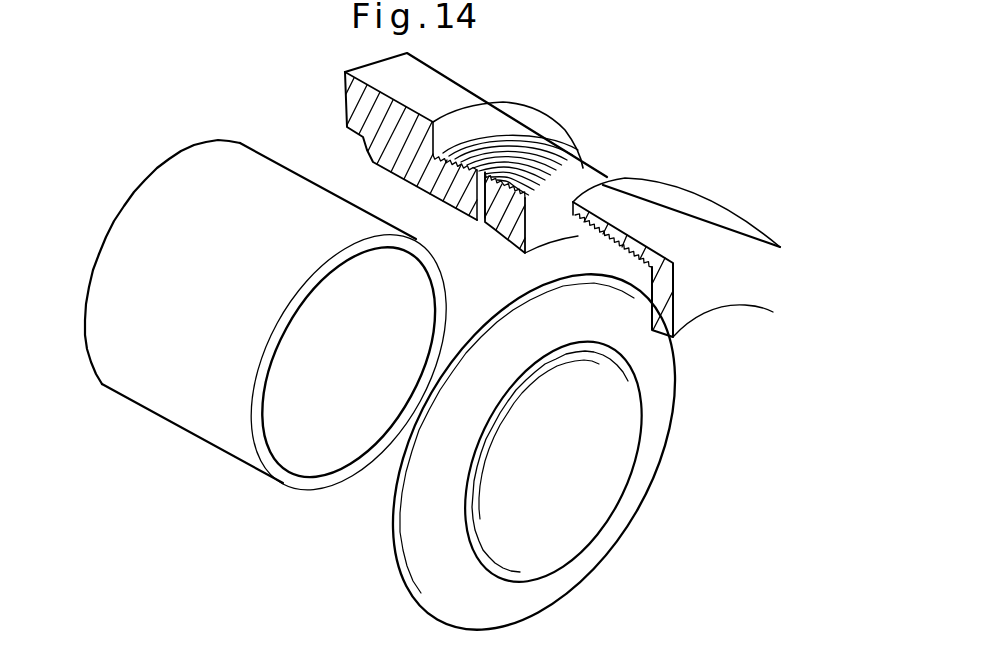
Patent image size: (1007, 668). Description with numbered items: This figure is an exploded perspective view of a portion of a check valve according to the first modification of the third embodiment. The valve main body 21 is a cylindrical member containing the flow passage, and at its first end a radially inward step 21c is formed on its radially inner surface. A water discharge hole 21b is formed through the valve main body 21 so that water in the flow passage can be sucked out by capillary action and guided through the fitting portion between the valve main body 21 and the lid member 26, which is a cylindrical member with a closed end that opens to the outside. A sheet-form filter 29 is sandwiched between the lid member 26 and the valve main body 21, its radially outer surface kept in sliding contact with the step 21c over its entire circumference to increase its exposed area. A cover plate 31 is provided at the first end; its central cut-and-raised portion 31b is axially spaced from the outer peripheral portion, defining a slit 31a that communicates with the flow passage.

The valve main body 21 is at (472, 88).
The water discharge hole 21b is at (477, 177).
The radially inward step 21c is at (503, 233).
The lid member 26 is at (660, 212).
The filter 29 is at (212, 393).
The cover plate 31 is at (657, 400).
The slit 31a is at (507, 397).
The cut-and-raised portion 31b is at (600, 452).